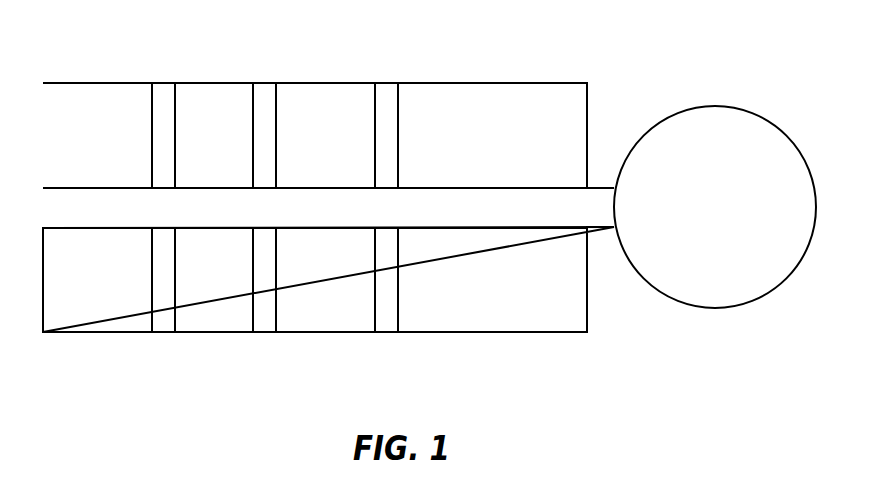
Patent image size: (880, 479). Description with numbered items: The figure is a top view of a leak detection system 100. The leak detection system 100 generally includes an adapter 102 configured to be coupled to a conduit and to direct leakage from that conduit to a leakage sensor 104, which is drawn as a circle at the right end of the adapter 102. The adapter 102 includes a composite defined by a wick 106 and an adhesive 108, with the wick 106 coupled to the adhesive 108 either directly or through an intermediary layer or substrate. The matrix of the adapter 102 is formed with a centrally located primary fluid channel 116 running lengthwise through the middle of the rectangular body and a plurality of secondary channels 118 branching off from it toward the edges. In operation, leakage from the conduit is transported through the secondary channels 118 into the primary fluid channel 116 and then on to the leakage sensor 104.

The leak detection system 100 is at (662, 34).
The adapter 102 is at (88, 82).
The leakage sensor 104 is at (730, 293).
The wick 106 is at (385, 112).
The adhesive 108 is at (85, 314).
The primary fluid channel 116 is at (433, 213).
The secondary channels 118 is at (263, 112).